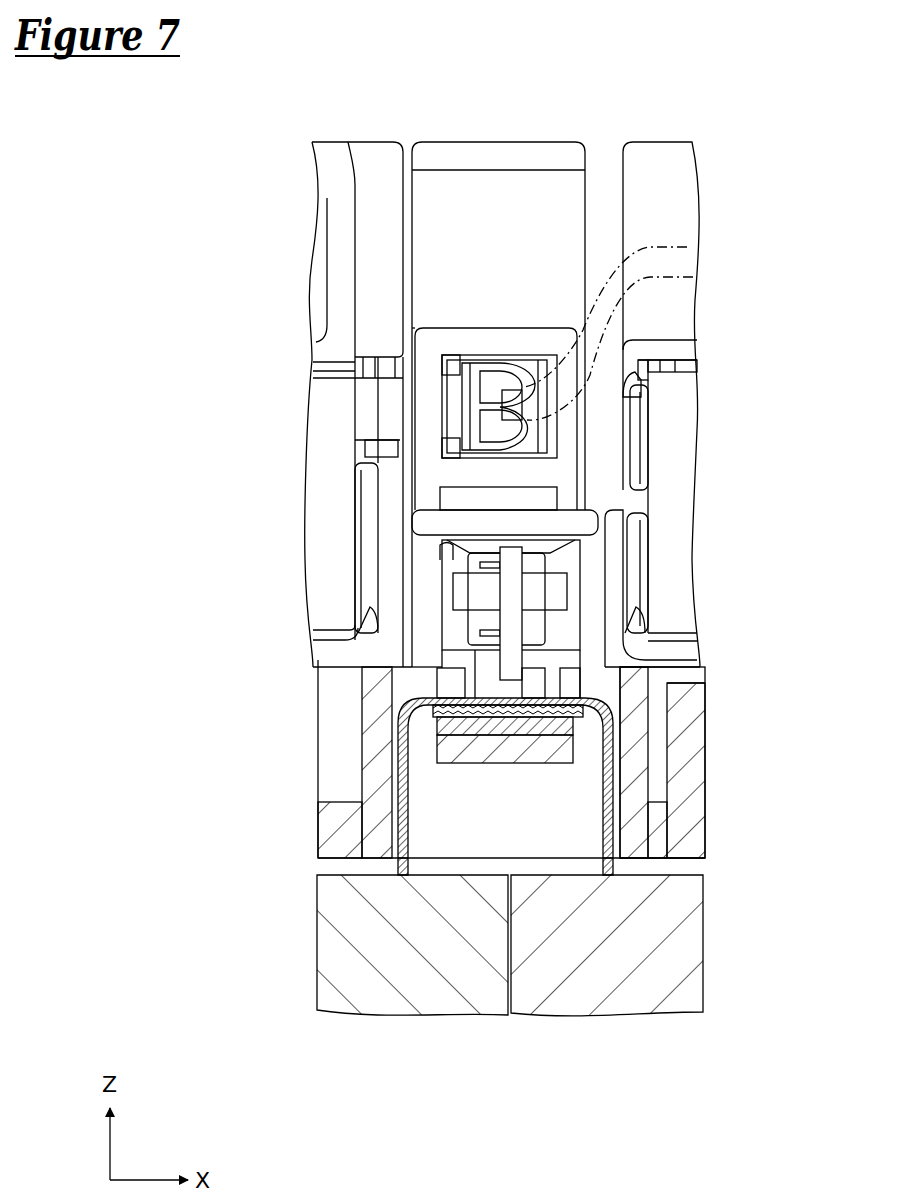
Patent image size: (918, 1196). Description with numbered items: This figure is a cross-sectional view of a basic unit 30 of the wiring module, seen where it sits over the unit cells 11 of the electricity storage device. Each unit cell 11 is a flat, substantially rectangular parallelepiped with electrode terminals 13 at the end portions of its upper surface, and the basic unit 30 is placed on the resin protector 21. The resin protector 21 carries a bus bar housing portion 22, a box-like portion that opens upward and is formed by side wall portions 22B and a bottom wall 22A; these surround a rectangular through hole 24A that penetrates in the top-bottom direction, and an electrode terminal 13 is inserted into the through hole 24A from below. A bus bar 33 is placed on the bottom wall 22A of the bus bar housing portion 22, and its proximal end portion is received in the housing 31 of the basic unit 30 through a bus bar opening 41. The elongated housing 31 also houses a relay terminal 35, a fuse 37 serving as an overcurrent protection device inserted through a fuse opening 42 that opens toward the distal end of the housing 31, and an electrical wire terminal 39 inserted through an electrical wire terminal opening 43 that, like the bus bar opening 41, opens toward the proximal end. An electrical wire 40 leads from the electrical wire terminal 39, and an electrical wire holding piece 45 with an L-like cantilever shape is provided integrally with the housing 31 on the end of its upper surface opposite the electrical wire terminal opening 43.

The unit cell 11 is at (383, 990).
The electrode terminal 13 is at (407, 820).
The resin protector 21 is at (688, 835).
The bus bar housing portion 22 is at (410, 667).
The bottom wall 22A is at (452, 752).
The side wall portion 22B is at (372, 707).
The through hole 24A is at (457, 750).
The basic unit 30 is at (490, 128).
The housing 31 is at (512, 342).
The bus bar 33 is at (517, 723).
The relay terminal 35 is at (535, 593).
The fuse 37 is at (675, 492).
The electrical wire terminal 39 is at (502, 368).
The electrical wire 40 is at (662, 262).
The bus bar opening 41 is at (445, 555).
The fuse opening 42 is at (660, 370).
The electrical wire terminal opening 43 is at (462, 432).
The electrical wire holding piece 45 is at (530, 193).